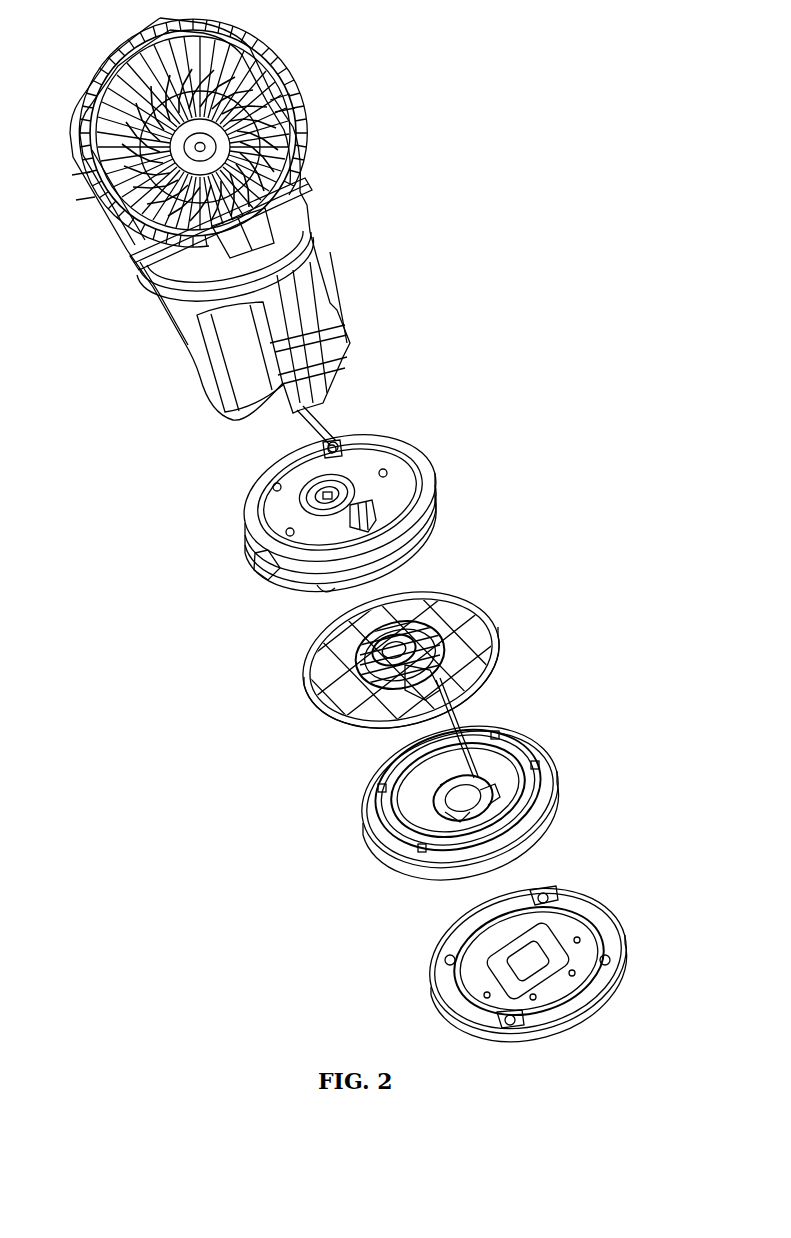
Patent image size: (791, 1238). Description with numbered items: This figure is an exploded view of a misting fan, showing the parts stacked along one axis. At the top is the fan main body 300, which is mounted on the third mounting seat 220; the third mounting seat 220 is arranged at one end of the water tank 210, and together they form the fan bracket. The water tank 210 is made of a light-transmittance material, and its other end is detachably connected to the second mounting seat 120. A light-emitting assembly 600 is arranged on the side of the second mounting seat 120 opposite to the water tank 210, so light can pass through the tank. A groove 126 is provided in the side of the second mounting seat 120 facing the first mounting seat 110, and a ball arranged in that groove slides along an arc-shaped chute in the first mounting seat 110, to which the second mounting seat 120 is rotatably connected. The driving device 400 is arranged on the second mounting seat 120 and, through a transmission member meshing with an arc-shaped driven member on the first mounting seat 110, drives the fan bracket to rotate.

The fan main body 300 is at (285, 115).
The third mounting seat 220 is at (295, 185).
The water tank 210 is at (190, 350).
The light-emitting assembly 600 is at (262, 540).
The second mounting seat 120 is at (247, 557).
The groove 126 is at (305, 693).
The first mounting seat 110 is at (370, 830).
The driving device 400 is at (495, 792).